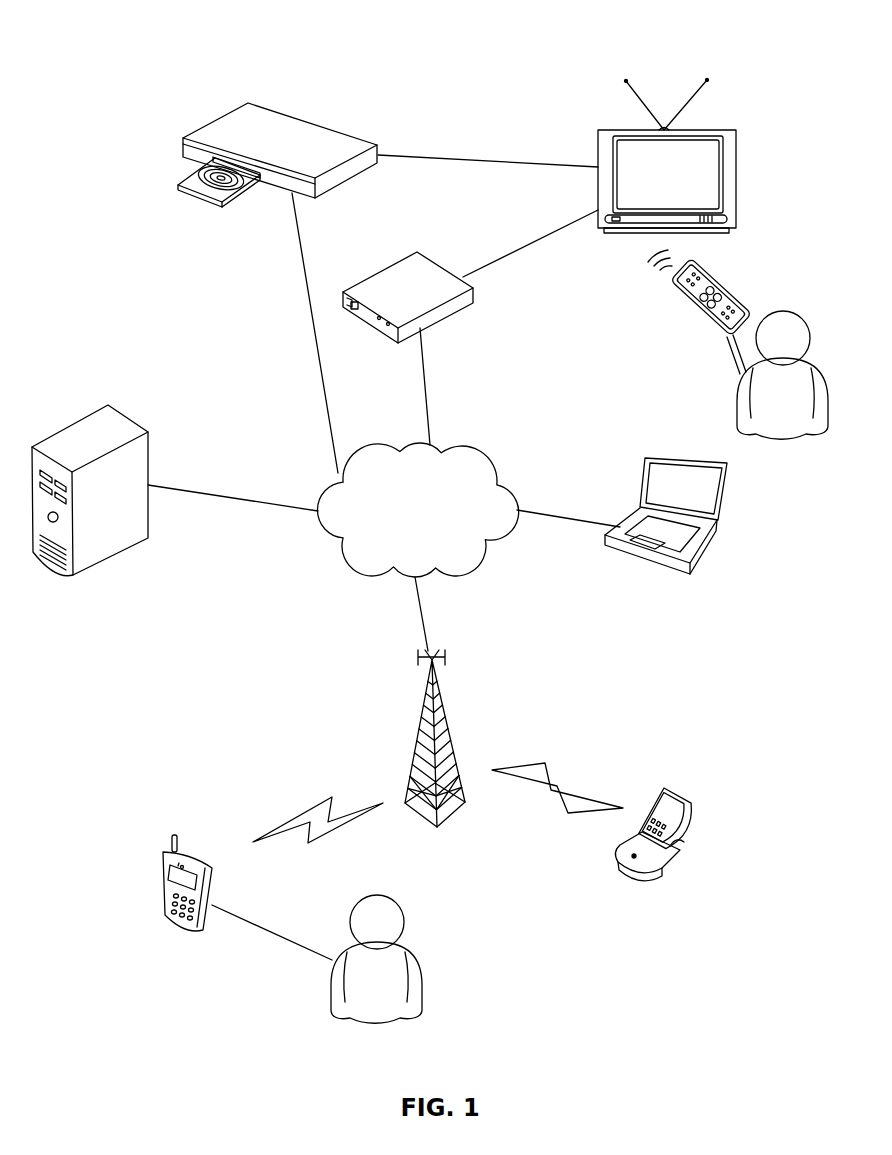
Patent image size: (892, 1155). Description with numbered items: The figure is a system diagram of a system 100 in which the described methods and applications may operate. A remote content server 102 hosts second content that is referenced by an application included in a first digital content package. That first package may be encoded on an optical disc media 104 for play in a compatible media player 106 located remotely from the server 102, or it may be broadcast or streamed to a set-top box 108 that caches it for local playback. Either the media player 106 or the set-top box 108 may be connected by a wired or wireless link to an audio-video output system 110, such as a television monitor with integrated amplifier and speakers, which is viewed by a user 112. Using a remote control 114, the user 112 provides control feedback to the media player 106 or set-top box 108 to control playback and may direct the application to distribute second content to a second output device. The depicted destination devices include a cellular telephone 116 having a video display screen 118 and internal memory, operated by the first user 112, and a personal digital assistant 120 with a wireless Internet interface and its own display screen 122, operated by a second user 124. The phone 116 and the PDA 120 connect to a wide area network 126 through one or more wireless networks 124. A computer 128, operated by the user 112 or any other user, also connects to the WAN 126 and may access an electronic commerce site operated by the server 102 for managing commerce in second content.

The system 100 is at (129, 36).
The remote content server 102 is at (118, 420).
The optical disc media 104 is at (193, 170).
The media player 106 is at (270, 118).
The set-top box 108 is at (395, 273).
The audio-video output system 110 is at (723, 130).
The user 112 is at (790, 312).
The remote control 114 is at (722, 282).
The cellular telephone 116 is at (660, 860).
The video display screen 118 is at (675, 800).
The personal digital assistant 120 is at (190, 853).
The display 122 is at (170, 882).
The second user / wireless network 124 is at (437, 677).
The wide area network 126 is at (397, 520).
The computer 128 is at (655, 456).